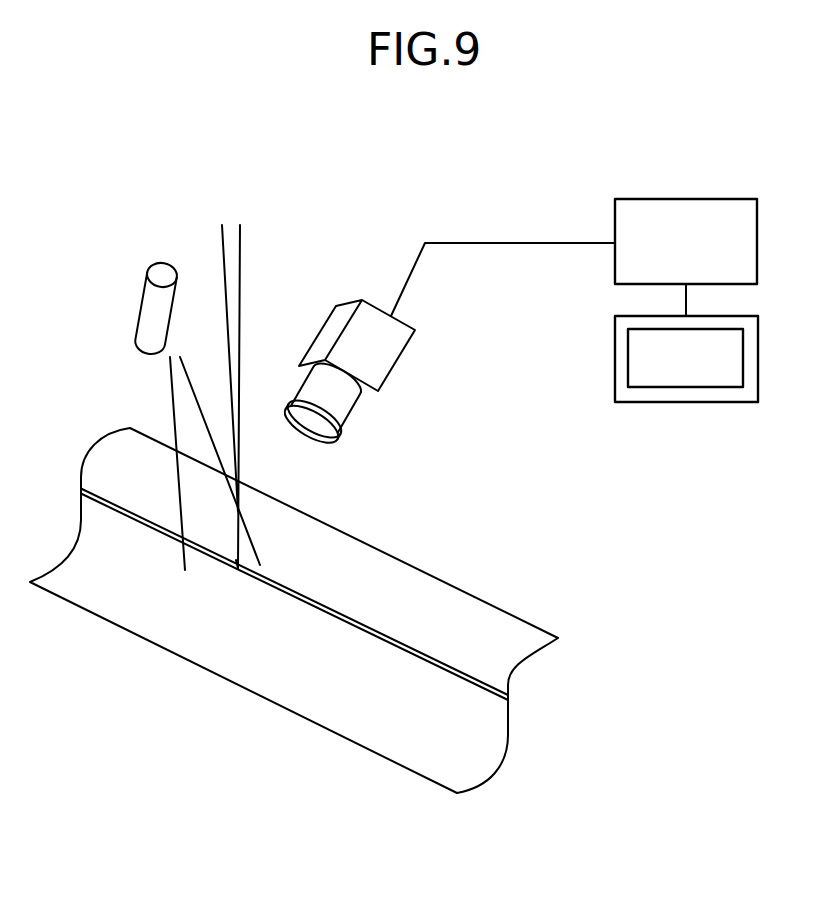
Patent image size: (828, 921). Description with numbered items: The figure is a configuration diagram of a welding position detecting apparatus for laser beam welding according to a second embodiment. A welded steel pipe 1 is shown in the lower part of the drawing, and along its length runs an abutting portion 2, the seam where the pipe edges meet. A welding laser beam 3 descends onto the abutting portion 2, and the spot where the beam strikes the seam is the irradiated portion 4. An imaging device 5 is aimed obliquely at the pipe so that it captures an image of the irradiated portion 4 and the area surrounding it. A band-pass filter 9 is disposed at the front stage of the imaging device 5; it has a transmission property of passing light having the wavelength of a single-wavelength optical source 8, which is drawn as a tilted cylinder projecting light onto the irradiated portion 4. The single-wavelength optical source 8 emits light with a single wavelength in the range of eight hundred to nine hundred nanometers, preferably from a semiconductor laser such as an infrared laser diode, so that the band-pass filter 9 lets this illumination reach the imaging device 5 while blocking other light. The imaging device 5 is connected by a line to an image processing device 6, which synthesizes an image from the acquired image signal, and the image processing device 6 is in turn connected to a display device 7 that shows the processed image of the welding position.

The welded steel pipe 1 is at (484, 609).
The abutting portion 2 is at (397, 652).
The welding laser beam 3 is at (242, 268).
The irradiated portion 4 is at (233, 573).
The imaging device 5 is at (398, 362).
The image processing device 6 is at (687, 199).
The display device 7 is at (758, 360).
The single-wavelength optical source 8 is at (150, 310).
The band-pass filter 9 is at (343, 437).